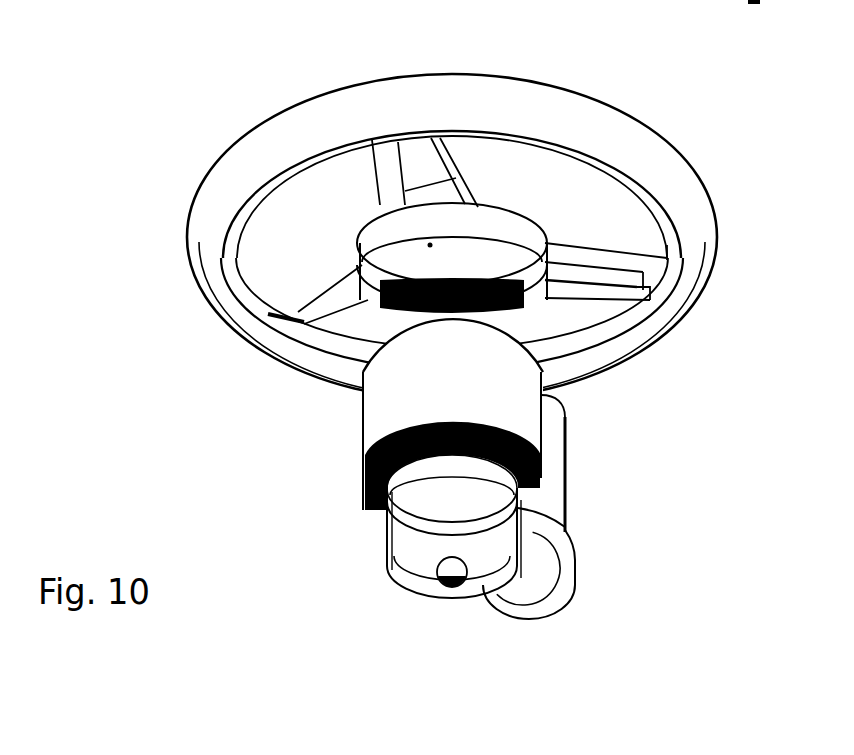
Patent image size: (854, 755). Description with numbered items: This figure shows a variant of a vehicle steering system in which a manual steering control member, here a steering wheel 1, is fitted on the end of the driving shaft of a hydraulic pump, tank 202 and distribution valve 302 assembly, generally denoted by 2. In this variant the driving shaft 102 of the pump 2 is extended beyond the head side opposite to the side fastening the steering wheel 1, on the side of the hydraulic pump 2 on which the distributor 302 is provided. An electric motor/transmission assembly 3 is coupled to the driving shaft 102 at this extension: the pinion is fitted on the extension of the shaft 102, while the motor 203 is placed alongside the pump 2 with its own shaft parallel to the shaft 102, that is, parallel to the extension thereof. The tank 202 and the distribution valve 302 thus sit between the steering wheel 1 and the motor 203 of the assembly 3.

The steering wheel 1 is at (292, 88).
The pump, tank and distribution valve assembly 2 is at (352, 402).
The tank 202 is at (377, 412).
The distribution valve 302 is at (414, 465).
The shaft 102 is at (447, 573).
The electric motor/transmission assembly 3 is at (613, 507).
The motor 203 is at (565, 495).